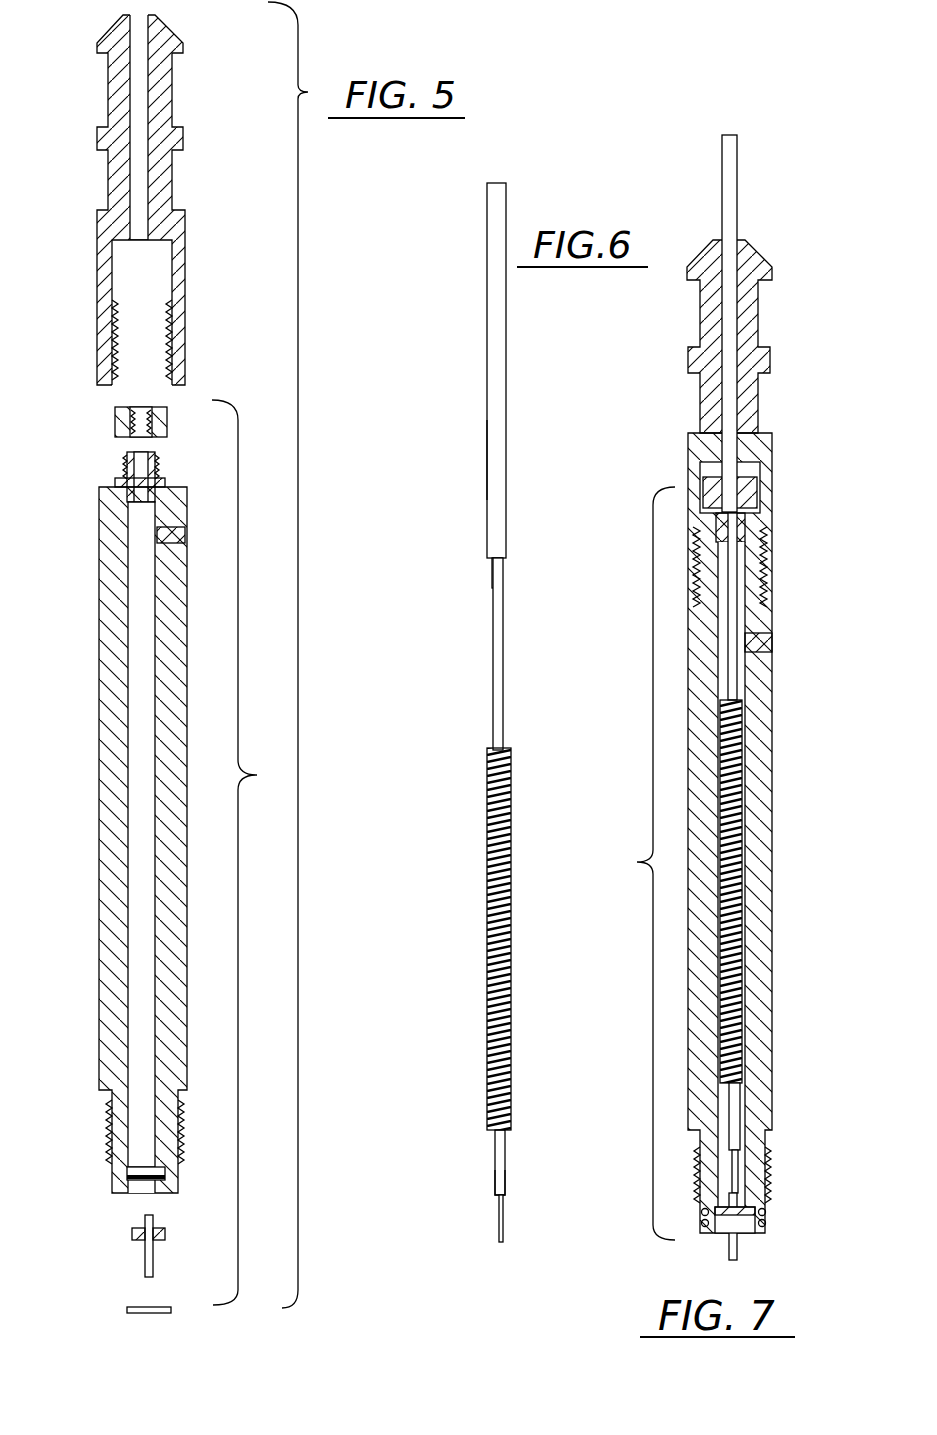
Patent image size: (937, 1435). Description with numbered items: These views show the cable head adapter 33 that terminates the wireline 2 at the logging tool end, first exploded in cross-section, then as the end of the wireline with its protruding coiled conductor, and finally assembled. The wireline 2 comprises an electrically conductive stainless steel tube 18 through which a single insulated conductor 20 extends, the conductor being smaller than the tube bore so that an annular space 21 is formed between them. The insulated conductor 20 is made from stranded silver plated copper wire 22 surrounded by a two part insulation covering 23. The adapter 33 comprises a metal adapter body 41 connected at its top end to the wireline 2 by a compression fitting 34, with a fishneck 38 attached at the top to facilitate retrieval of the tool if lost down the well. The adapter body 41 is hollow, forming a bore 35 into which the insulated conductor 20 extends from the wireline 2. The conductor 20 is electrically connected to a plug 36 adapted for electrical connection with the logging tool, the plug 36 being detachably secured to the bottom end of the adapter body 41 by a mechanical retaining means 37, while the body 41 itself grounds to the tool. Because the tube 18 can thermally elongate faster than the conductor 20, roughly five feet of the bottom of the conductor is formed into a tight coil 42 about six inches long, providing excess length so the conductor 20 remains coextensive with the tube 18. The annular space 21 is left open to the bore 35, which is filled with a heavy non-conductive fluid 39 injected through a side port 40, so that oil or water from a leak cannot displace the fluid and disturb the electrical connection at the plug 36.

In FIG. 6, the wireline 2 is at (495, 300).
In FIG. 7, the wireline 2 is at (737, 197).
In FIG. 6, the tube 18 is at (487, 460).
In FIG. 6, the insulated conductor 20 is at (493, 715).
In FIG. 6, the annular space 21 is at (492, 565).
In FIG. 6, the wire 22 is at (500, 1220).
In FIG. 6, the insulation covering 23 is at (495, 1175).
In FIG. 5, the cable head adapter 33 is at (255, 852).
In FIG. 7, the cable head adapter 33 is at (637, 863).
In FIG. 5, the compression fitting 34 is at (125, 475).
In FIG. 5, the bore 35 is at (140, 852).
In FIG. 7, the bore 35 is at (738, 1102).
In FIG. 5, the plug 36 is at (145, 1245).
In FIG. 7, the plug 36 is at (737, 1247).
In FIG. 5, the mechanical retaining means 37 is at (150, 1307).
In FIG. 5, the fishneck 38 is at (108, 205).
In FIG. 7, the fishneck 38 is at (770, 357).
In FIG. 7, the non-conductive fluid 39 is at (735, 1152).
In FIG. 5, the side port 40 is at (160, 535).
In FIG. 5, the adapter body 41 is at (110, 695).
In FIG. 7, the adapter body 41 is at (762, 905).
In FIG. 6, the tight coil 42 is at (495, 965).
In FIG. 7, the tight coil 42 is at (743, 950).